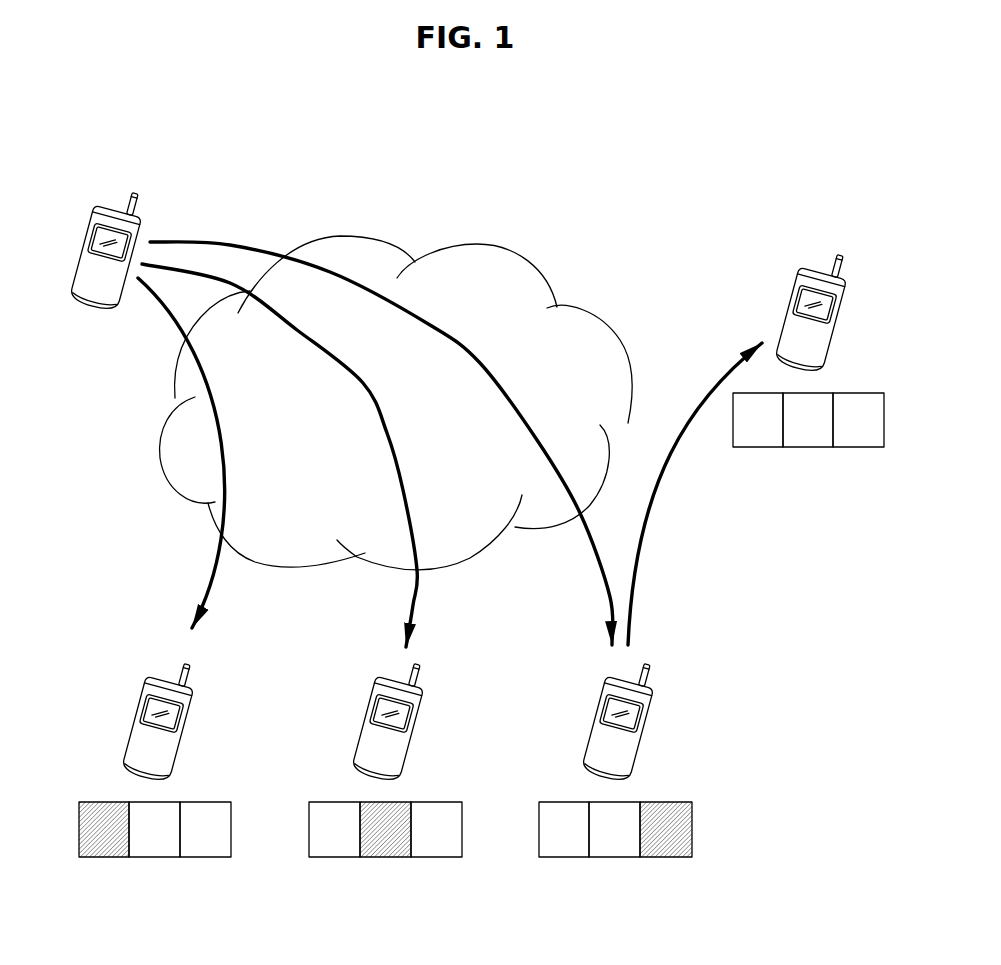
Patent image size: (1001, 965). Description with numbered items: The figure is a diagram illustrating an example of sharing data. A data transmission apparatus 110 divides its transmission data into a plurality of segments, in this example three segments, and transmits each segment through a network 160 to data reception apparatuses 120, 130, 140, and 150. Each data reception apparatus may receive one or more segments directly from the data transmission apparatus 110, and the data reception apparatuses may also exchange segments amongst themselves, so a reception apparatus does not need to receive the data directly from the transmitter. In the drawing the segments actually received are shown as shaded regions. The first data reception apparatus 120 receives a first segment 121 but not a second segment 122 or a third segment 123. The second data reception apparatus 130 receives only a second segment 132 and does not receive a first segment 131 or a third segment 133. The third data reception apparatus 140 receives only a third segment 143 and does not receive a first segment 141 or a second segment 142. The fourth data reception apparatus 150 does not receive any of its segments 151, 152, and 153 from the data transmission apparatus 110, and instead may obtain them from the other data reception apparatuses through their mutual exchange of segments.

The data transmission apparatus 110 is at (92, 204).
The first data reception apparatus 120 is at (193, 683).
The first segment 121 is at (95, 858).
The second segment 122 is at (155, 858).
The third segment 123 is at (216, 858).
The second data reception apparatus 130 is at (423, 683).
The first segment 131 is at (325, 858).
The second segment 132 is at (385, 858).
The third segment 133 is at (446, 858).
The third data reception apparatus 140 is at (653, 683).
The first segment 141 is at (555, 858).
The second segment 142 is at (615, 858).
The third segment 143 is at (676, 858).
The fourth data reception apparatus 150 is at (798, 262).
The segment 151 is at (748, 448).
The segment 152 is at (808, 448).
The segment 153 is at (870, 448).
The network 160 is at (452, 243).